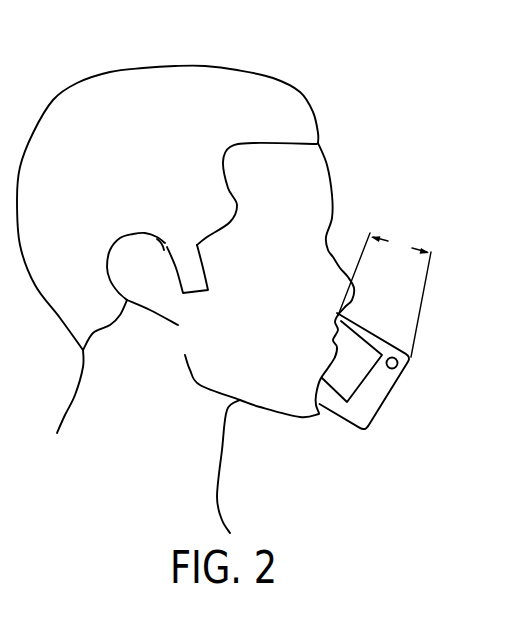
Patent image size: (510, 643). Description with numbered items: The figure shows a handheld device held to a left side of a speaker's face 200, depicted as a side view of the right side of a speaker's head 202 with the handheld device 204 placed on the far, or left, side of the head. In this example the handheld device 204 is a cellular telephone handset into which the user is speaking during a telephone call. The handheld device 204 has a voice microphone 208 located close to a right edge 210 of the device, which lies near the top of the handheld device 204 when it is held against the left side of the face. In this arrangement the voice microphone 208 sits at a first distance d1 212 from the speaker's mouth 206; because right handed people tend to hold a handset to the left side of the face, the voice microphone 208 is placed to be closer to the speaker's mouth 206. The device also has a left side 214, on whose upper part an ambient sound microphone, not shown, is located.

The handheld device held to a left side of a speaker's face 200 is at (420, 126).
The speaker's head 202 is at (195, 67).
The handheld device 204 is at (378, 412).
The speaker's mouth 206 is at (337, 338).
The voice microphone 208 is at (397, 366).
The right edge 210 is at (382, 340).
The first distance d1 212 is at (412, 247).
The left side 214 is at (322, 420).